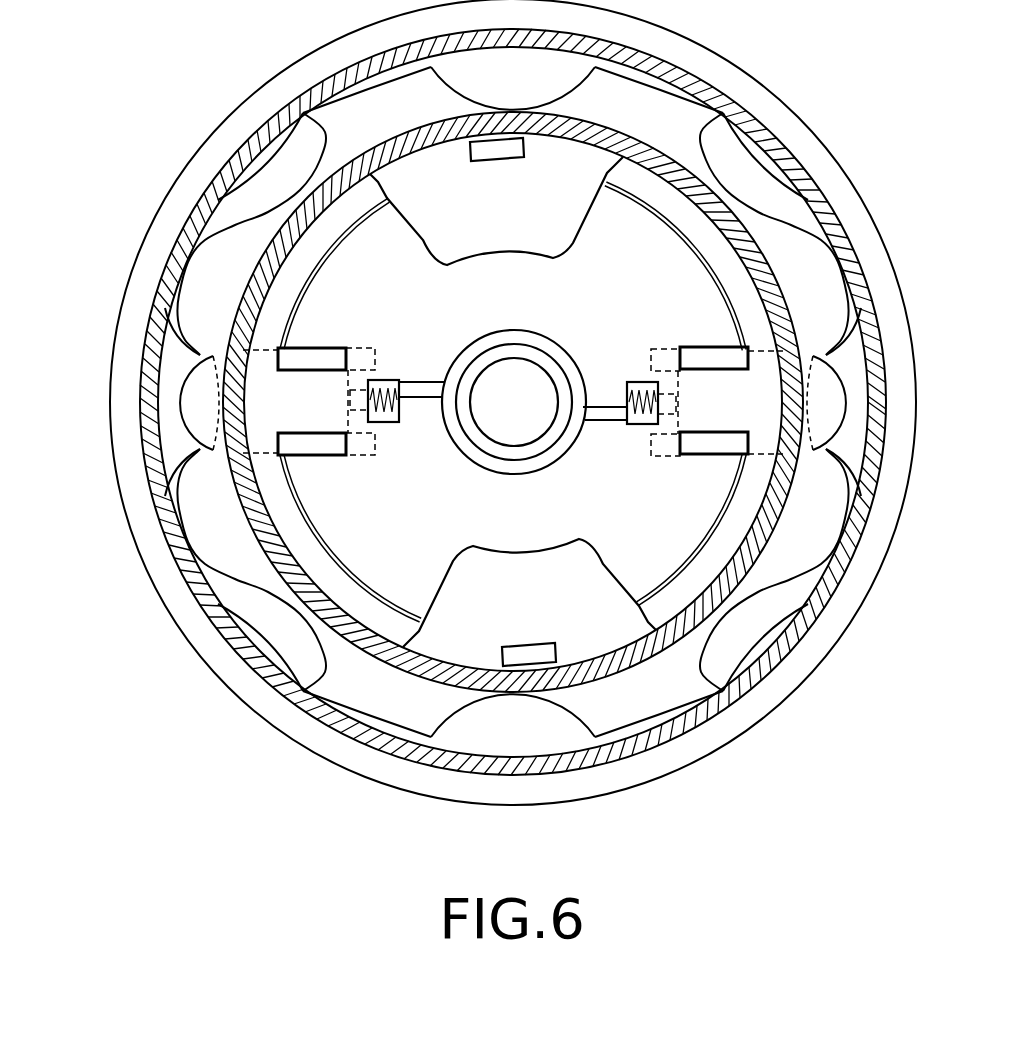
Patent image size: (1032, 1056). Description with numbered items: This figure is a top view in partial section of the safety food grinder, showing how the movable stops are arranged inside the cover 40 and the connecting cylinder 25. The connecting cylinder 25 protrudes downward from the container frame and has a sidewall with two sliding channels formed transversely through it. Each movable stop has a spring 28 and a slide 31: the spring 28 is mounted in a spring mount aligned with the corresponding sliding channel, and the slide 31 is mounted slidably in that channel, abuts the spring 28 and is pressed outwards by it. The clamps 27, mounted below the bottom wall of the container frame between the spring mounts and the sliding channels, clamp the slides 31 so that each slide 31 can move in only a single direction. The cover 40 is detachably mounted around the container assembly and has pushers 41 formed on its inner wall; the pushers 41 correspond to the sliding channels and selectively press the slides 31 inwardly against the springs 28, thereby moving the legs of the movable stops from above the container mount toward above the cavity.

The cover 40 is at (163, 268).
The pushers 41 is at (170, 396).
The slide 31 is at (265, 447).
The connecting cylinder 25 is at (303, 597).
The spring 28 is at (385, 385).
The clamps 27 is at (310, 446).